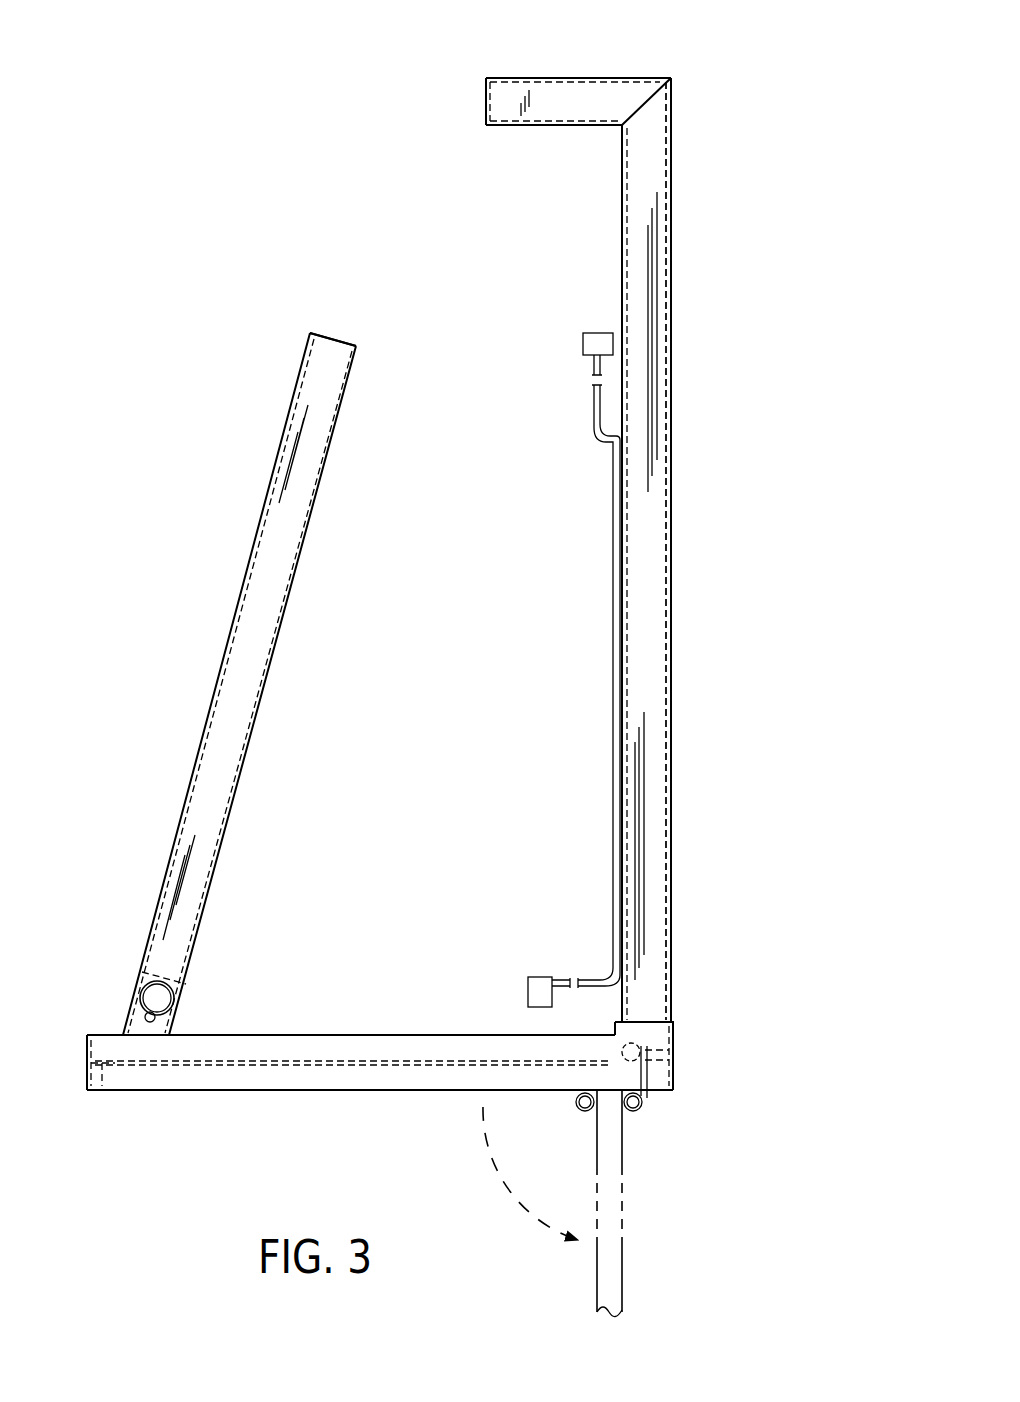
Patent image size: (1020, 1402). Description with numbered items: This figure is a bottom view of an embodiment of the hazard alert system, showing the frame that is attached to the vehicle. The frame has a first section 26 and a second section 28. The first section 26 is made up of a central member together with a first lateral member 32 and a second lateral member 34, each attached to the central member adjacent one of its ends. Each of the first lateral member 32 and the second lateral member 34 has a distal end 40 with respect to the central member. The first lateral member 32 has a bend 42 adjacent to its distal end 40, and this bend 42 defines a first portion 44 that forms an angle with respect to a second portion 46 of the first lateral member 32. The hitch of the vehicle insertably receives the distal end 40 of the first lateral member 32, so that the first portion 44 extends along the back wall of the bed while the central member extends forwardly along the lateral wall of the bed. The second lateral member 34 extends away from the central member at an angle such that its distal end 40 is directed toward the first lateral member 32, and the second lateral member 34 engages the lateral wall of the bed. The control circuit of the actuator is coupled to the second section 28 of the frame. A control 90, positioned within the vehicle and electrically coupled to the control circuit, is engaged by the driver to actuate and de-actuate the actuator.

The first section 26 is at (445, 658).
The second section 28 is at (261, 1094).
The first lateral member 32 is at (671, 502).
The second lateral member 34 is at (223, 660).
The distal end 40 is at (486, 100).
The bend 42 is at (671, 78).
The first portion 44 is at (674, 230).
The second portion 46 is at (580, 77).
The control 90 is at (540, 977).